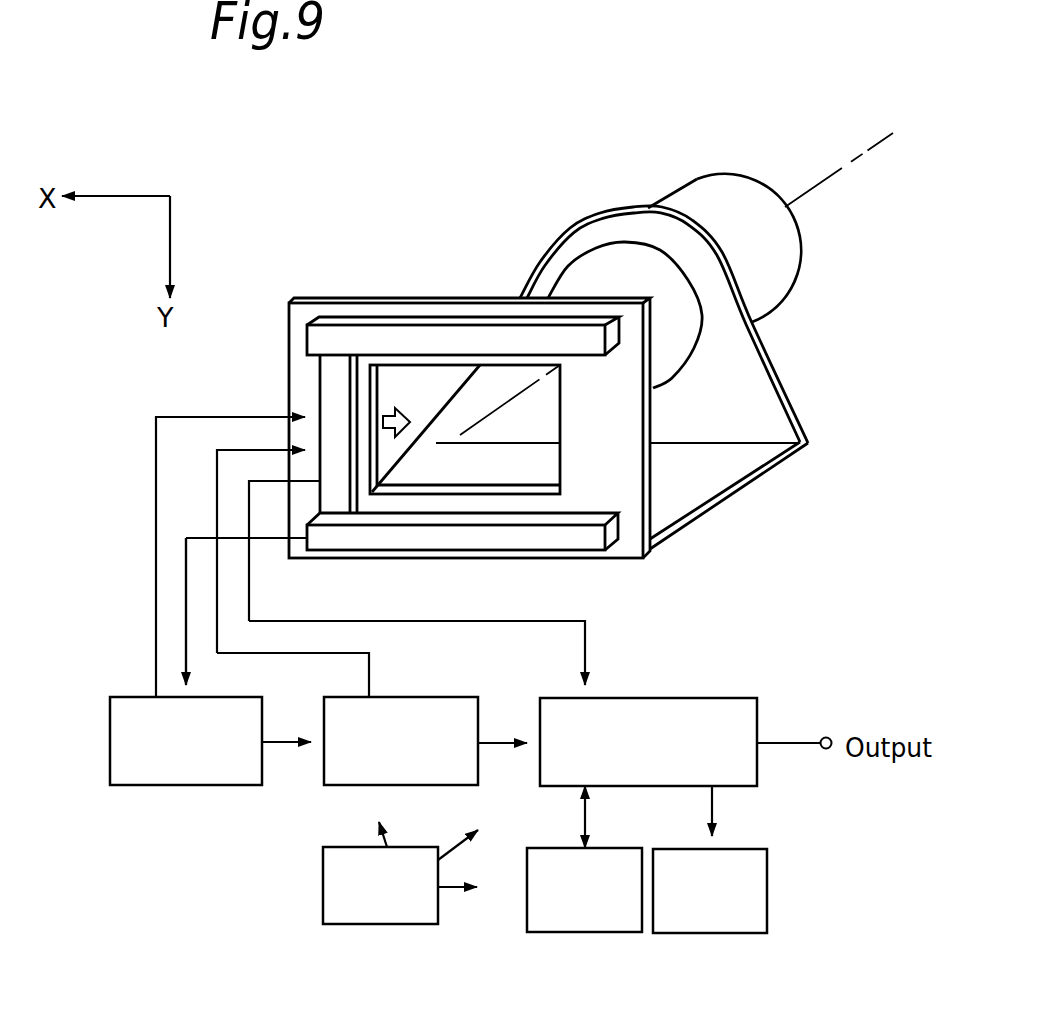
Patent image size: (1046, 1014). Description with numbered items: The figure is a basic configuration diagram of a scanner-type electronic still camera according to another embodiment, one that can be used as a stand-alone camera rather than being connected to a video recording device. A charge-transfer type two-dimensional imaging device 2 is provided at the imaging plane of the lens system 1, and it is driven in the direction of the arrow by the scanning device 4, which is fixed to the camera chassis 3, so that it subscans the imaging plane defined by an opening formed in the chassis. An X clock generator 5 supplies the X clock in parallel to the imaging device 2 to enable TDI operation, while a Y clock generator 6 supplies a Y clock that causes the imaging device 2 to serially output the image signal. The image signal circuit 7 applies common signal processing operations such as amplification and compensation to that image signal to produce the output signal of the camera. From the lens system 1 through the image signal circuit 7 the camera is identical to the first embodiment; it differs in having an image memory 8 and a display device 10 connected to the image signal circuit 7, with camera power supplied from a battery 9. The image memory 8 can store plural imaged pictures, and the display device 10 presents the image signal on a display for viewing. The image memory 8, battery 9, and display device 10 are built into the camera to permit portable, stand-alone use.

The lens system 1 is at (715, 207).
The charge-transfer type two-dimensional imaging device 2 is at (333, 390).
The camera chassis 3 is at (707, 487).
The scanning device 4 is at (467, 342).
The X clock generator 5 is at (185, 787).
The Y clock generator 6 is at (435, 696).
The image signal circuit 7 is at (700, 698).
The image memory 8 is at (583, 933).
The battery 9 is at (378, 925).
The display device 10 is at (710, 933).